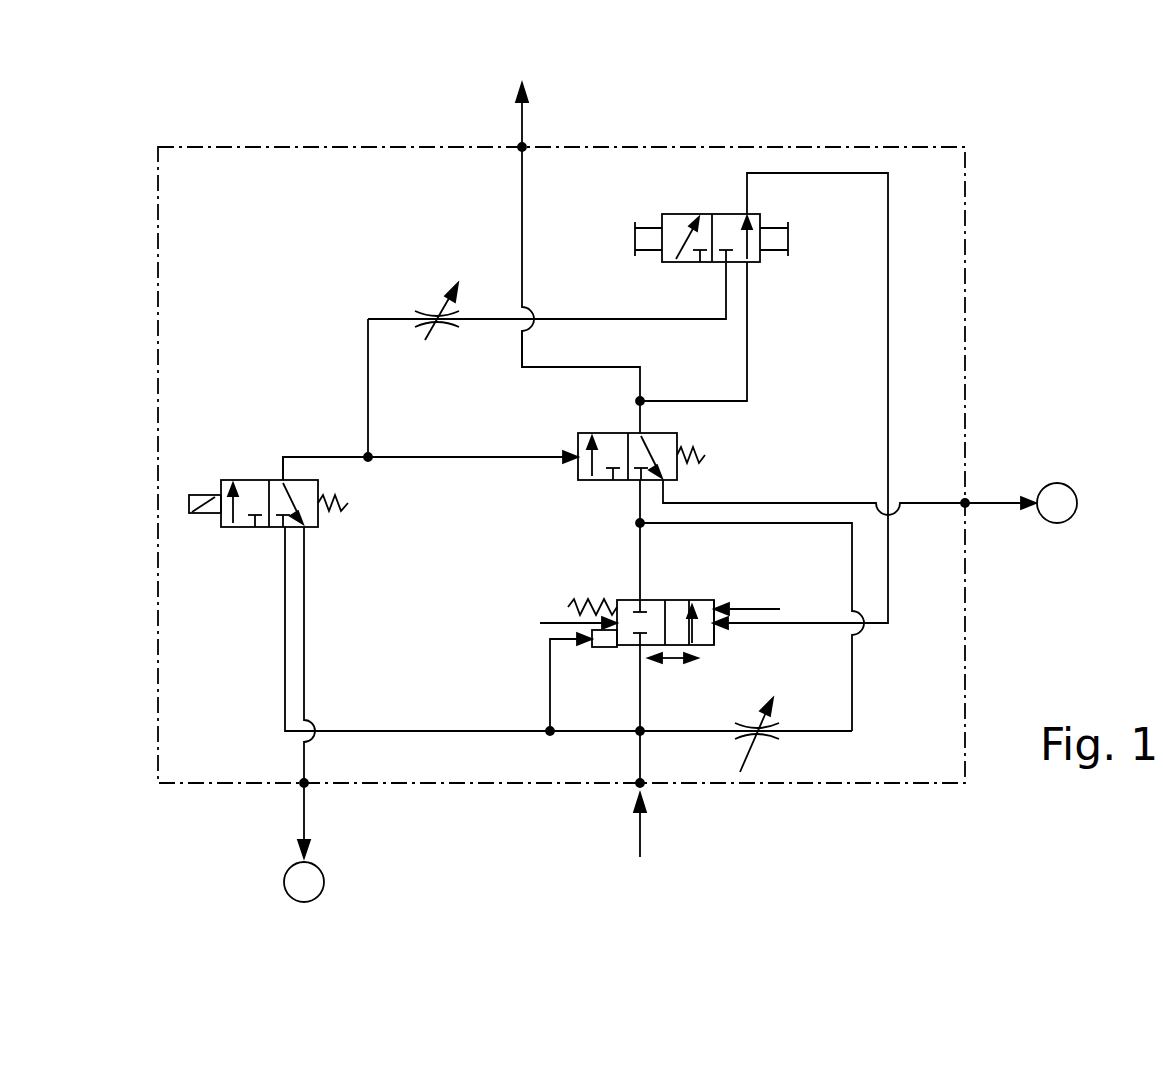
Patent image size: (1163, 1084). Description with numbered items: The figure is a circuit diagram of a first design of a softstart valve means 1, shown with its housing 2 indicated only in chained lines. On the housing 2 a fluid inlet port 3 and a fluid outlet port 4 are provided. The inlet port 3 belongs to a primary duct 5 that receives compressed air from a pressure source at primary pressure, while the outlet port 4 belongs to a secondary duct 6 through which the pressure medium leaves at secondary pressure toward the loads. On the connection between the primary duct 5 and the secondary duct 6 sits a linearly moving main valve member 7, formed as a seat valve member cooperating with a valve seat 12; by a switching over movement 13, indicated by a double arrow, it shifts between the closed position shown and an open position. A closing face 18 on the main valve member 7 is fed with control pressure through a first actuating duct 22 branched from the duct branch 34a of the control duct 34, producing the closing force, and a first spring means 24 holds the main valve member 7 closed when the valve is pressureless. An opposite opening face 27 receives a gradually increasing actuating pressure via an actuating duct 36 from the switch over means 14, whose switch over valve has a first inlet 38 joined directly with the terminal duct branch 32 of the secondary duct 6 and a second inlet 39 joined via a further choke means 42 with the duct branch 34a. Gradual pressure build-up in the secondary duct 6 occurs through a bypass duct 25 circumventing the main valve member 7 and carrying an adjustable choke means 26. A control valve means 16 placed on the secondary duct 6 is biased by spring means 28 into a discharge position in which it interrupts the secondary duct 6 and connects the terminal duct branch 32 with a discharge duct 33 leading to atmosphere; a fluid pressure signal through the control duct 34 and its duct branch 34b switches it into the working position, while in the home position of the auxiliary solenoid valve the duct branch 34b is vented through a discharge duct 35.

The softstart valve means 1 is at (1096, 144).
The housing 2 is at (965, 337).
The fluid inlet port 3 is at (639, 782).
The fluid outlet port 4 is at (524, 146).
The primary duct 5 is at (642, 757).
The secondary duct 6 is at (522, 207).
The main valve member 7 is at (708, 598).
The valve seat 12 is at (228, 470).
The switching over movement 13 is at (672, 662).
The switch over means 14 is at (862, 272).
The control valve means 16 is at (566, 484).
The closing face 18 is at (582, 664).
The first actuating duct 22 is at (550, 677).
The first spring means 24 is at (588, 596).
The bypass duct 25 is at (856, 692).
The choke means 26 is at (780, 740).
The opening face 27 is at (735, 646).
The spring means 28 is at (706, 451).
The terminal duct branch 32 is at (581, 349).
The discharge duct 33 is at (930, 501).
The control duct 34 is at (412, 462).
The duct branch 34a is at (460, 738).
The duct branch 34b is at (312, 455).
The discharge duct 35 is at (304, 757).
The actuating duct 36 is at (888, 362).
The first inlet 38 is at (749, 264).
The second inlet 39 is at (727, 264).
The further choke means 42 is at (432, 317).